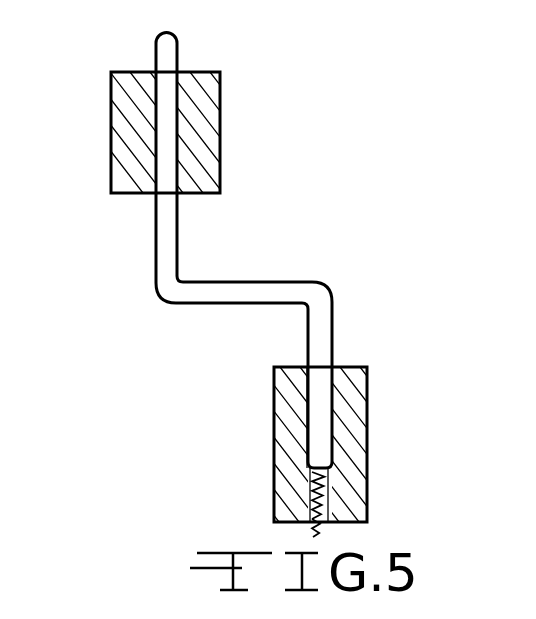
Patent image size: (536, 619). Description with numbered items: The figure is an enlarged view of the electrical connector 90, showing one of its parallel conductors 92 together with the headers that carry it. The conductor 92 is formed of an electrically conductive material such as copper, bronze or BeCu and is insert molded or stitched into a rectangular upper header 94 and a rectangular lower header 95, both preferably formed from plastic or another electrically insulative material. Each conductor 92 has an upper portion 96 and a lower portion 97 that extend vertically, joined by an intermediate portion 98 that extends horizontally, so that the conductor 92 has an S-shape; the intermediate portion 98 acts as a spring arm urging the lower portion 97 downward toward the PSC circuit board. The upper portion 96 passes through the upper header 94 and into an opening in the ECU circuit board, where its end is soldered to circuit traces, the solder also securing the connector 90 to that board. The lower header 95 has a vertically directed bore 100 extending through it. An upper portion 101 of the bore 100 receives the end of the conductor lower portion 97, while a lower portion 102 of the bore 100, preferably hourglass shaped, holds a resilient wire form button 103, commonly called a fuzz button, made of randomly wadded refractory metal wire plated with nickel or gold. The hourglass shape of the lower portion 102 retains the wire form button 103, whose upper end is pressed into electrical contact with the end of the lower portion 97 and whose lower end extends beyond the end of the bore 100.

The connector 90 is at (345, 190).
The conductor 92 is at (224, 251).
The upper header 94 is at (205, 95).
The lower header 95 is at (353, 385).
The upper portion 96 is at (178, 222).
The lower portion 97 is at (334, 325).
The intermediate portion 98 is at (288, 282).
The bore 100 is at (296, 352).
The upper portion of bore 101 is at (308, 426).
The lower portion of bore 102 is at (326, 492).
The wire form button 103 is at (328, 534).